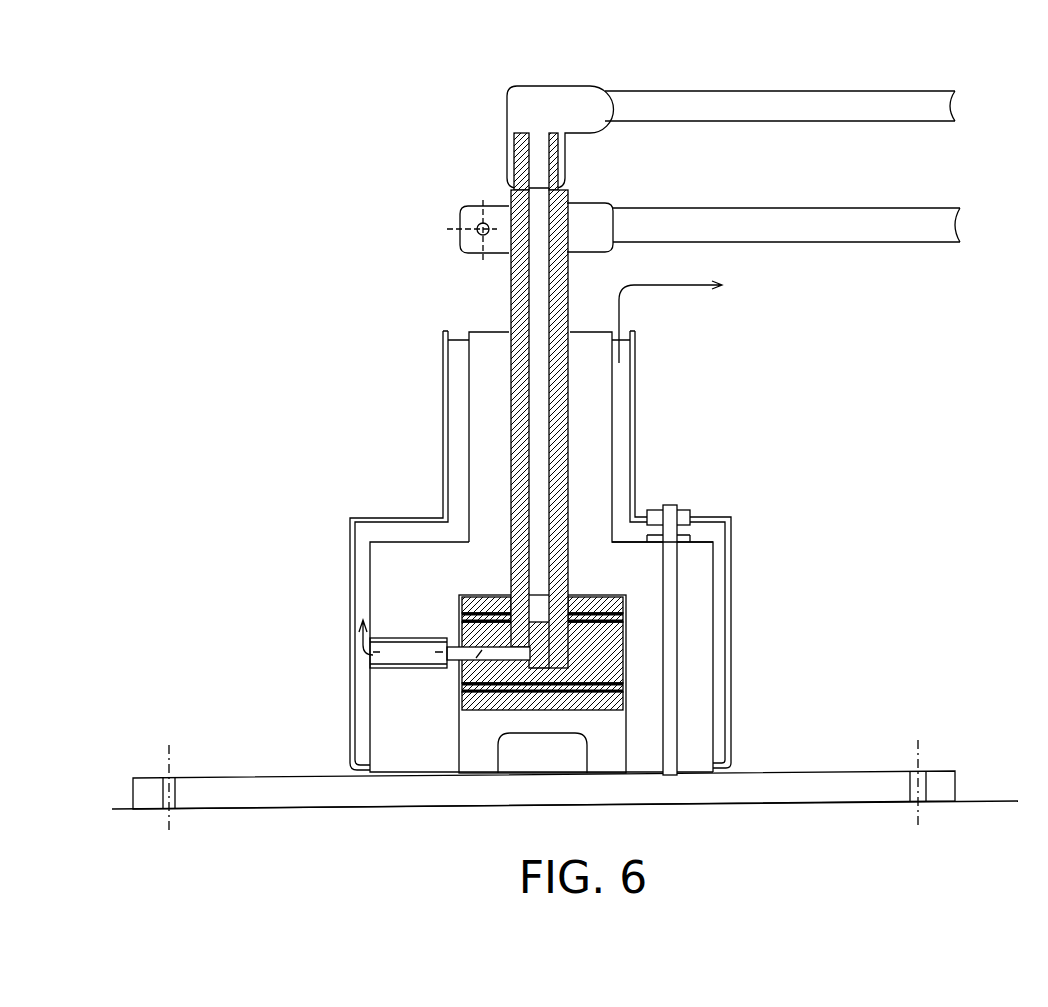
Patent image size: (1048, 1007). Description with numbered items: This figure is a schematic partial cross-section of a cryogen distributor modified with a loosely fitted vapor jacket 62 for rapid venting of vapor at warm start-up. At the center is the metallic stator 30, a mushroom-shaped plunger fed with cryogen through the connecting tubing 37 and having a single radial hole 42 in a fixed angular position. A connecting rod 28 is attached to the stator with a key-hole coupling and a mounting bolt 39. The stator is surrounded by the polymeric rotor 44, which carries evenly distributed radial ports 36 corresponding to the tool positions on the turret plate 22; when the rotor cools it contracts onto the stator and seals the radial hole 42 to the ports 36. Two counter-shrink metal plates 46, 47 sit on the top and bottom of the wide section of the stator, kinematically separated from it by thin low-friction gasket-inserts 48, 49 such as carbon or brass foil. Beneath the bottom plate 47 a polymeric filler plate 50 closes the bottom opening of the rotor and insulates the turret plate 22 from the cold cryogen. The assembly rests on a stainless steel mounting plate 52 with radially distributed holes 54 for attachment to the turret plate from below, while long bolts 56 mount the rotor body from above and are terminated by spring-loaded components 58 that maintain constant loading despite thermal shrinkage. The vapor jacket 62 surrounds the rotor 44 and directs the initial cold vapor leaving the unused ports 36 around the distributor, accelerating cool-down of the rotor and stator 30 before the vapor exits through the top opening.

The turret plate 22 is at (983, 802).
The connecting rod 28 is at (910, 208).
The stator 30 is at (510, 275).
The radial ports 36 is at (375, 660).
The connecting tubing 37 is at (797, 91).
The mounting bolt 39 is at (483, 229).
The radial hole 42 is at (480, 652).
The rotor 44 is at (487, 332).
The top counter-shrink metal plate 46 is at (480, 600).
The bottom counter-shrink metal plate 47 is at (626, 700).
The gasket-insert 48 is at (626, 687).
The gasket-insert 49 is at (460, 620).
The filler plate 50 is at (587, 748).
The mounting plate 52 is at (257, 809).
The radially distributed holes 54 is at (162, 812).
The long bolts 56 is at (668, 505).
The spring-loaded components 58 is at (650, 527).
The vapor jacket 62 is at (637, 408).